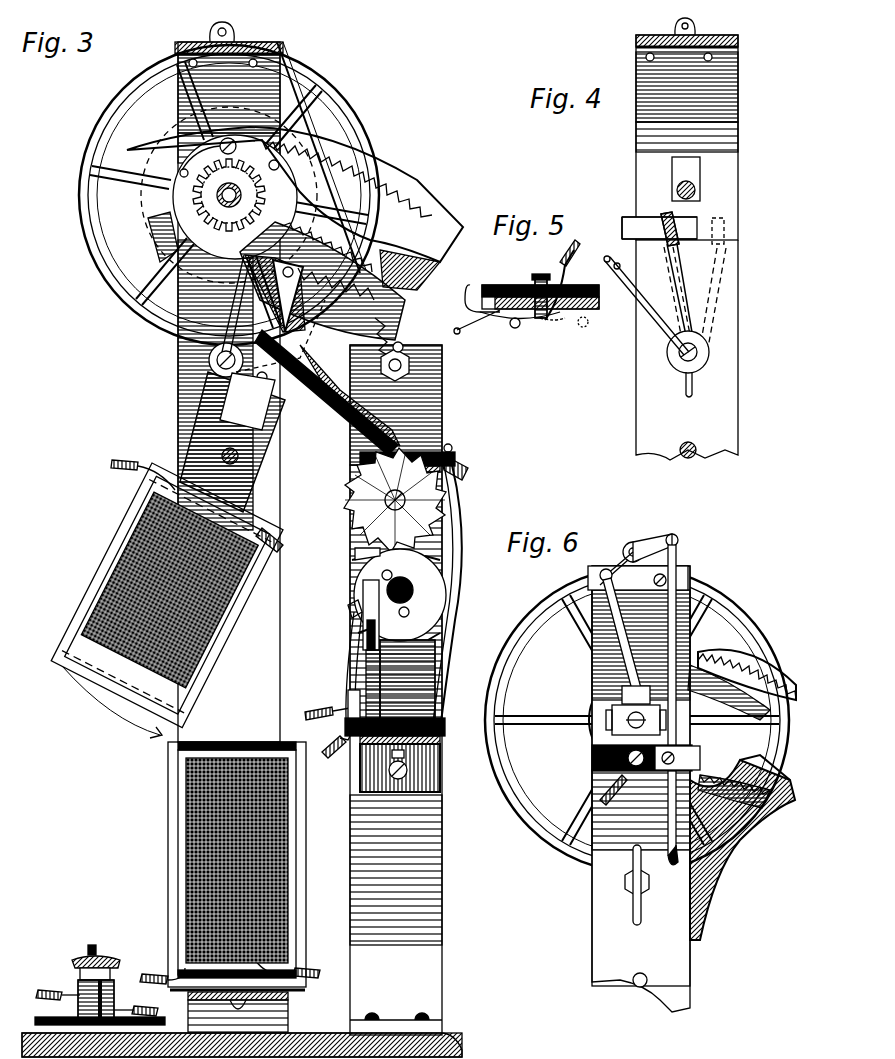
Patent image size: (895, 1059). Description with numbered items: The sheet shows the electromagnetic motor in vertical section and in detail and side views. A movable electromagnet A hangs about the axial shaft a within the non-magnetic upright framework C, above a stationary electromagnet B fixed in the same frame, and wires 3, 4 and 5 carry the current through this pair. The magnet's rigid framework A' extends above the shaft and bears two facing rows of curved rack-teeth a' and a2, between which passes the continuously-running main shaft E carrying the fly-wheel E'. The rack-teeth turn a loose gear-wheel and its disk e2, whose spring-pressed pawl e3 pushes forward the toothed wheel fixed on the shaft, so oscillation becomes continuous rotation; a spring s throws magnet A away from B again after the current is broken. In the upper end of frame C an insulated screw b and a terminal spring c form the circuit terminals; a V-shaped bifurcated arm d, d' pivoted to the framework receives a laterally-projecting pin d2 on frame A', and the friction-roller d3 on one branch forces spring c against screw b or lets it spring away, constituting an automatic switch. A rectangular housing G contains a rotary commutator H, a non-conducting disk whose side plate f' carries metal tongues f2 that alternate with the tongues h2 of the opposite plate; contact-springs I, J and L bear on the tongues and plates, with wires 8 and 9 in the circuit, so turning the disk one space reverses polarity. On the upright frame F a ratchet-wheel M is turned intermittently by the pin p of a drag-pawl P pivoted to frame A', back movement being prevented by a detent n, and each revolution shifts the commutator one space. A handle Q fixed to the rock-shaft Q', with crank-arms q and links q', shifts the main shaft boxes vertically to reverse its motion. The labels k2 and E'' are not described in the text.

In FIG. 3, the fly-wheel E' is at (217, 195).
In FIG. 4, the fly-wheel E' is at (677, 167).
In FIG. 3, the upright framework C is at (180, 375).
In FIG. 4, the upright framework C is at (696, 247).
In FIG. 5, the upright framework C is at (547, 301).
In FIG. 6, the upright framework C is at (641, 789).
In FIG. 3, the handle Q is at (210, 26).
In FIG. 6, the handle Q is at (646, 788).
In FIG. 3, the curved rack-teeth a2 is at (422, 200).
In FIG. 6, the curved rack-teeth a2 is at (725, 665).
In FIG. 3, the curved rack-teeth a' is at (322, 281).
In FIG. 6, the curved rack-teeth a' is at (734, 775).
In FIG. 3, the main shaft E is at (216, 195).
In FIG. 6, the main shaft E is at (630, 710).
In FIG. 3, the spring-pressed pawl e3 is at (207, 135).
In FIG. 3, the disk e2 is at (178, 225).
In FIG. 3, the spring c is at (278, 170).
In FIG. 4, the spring c is at (690, 222).
In FIG. 5, the spring c is at (548, 328).
In FIG. 3, the branch of bifurcated arm d is at (225, 316).
In FIG. 4, the branch of bifurcated arm d is at (695, 320).
In FIG. 3, the branch of bifurcated arm d' is at (280, 318).
In FIG. 4, the branch of bifurcated arm d' is at (646, 305).
In FIG. 5, the branch of bifurcated arm d' is at (507, 319).
In FIG. 3, the spring s is at (383, 330).
In FIG. 3, the axial shaft a is at (211, 442).
In FIG. 3, the drag-pawl P is at (335, 410).
In FIG. 3, the movable electromagnet A is at (167, 600).
In FIG. 3, the wire 4 is at (110, 465).
In FIG. 3, the wire 3 is at (283, 545).
In FIG. 3, the stationary electromagnet B is at (170, 878).
In FIG. 3, the wire 5 is at (158, 972).
In FIG. 4, the wire 5 is at (617, 193).
In FIG. 3, the upright frame F is at (442, 404).
In FIG. 3, the rectangular housing G is at (360, 462).
In FIG. 3, the ratchet-wheel M is at (345, 492).
In FIG. 3, the laterally-projecting pin p is at (462, 480).
In FIG. 3, the contact-spring I is at (455, 505).
In FIG. 3, the rotary commutator H is at (400, 595).
In FIG. 3, the side plate f' is at (383, 615).
In FIG. 3, the metal tongues f2 is at (456, 645).
In FIG. 3, the contact block k2 is at (355, 565).
In FIG. 3, the metal tongues h2 is at (350, 610).
In FIG. 3, the detent n is at (450, 620).
In FIG. 3, the contact-spring J is at (360, 648).
In FIG. 3, the contact-spring L is at (370, 668).
In FIG. 3, the wire 8 is at (326, 708).
In FIG. 3, the wire 9 is at (336, 756).
In FIG. 4, the rock-shaft Q' is at (671, 20).
In FIG. 6, the rock-shaft Q' is at (638, 549).
In FIG. 4, the friction-roller d3 is at (666, 212).
In FIG. 5, the friction-roller d3 is at (515, 330).
In FIG. 4, the laterally-projecting pin d2 is at (620, 263).
In FIG. 5, the insulated screw b is at (536, 278).
In FIG. 6, the escapement wheel E'' is at (637, 720).
In FIG. 6, the crank-arm q is at (611, 564).
In FIG. 6, the link q' is at (640, 705).
In FIG. 6, the rigid framework A' is at (742, 847).